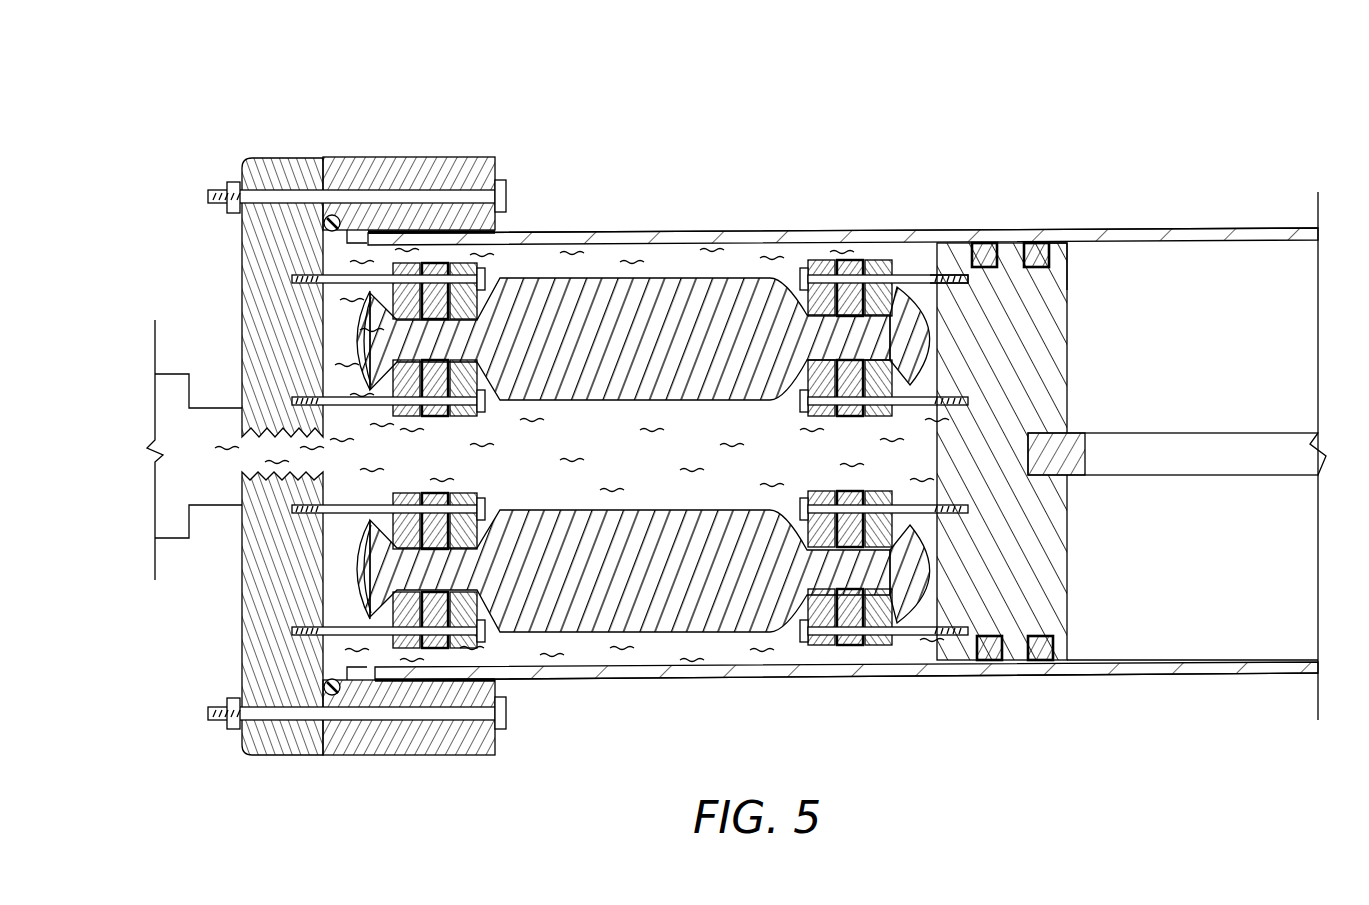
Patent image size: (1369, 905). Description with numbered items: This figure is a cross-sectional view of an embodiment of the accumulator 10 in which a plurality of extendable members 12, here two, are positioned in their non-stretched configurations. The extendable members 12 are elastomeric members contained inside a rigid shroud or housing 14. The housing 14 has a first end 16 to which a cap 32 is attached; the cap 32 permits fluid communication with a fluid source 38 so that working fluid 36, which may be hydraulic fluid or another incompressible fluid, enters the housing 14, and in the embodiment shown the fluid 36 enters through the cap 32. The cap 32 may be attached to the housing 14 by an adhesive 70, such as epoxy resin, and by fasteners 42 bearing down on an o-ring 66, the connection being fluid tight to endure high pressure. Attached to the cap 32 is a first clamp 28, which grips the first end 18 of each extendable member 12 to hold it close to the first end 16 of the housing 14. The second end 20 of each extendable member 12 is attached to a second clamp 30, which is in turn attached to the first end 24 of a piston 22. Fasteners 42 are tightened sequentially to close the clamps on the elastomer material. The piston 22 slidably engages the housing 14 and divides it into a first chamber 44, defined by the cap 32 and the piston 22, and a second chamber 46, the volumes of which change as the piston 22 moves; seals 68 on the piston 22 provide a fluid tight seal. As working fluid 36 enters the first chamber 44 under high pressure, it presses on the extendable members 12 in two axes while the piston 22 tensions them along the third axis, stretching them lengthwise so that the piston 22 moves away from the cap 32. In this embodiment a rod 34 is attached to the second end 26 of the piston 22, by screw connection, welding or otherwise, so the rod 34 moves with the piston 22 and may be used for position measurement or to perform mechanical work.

The accumulator 10 is at (1162, 108).
The extendable member 12 is at (578, 287).
The housing 14 is at (780, 232).
The first end of the housing 16 is at (365, 243).
The first end of the extendable member 18 is at (356, 600).
The second end of the extendable member 20 is at (900, 597).
The piston 22 is at (1062, 608).
The first end of the piston 24 is at (930, 262).
The second end of the piston 26 is at (1067, 258).
The first clamp 28 is at (485, 258).
The second clamp 30 is at (855, 258).
The cap 32 is at (340, 160).
The rod 34 is at (1248, 440).
The working fluid 36 is at (552, 655).
The fluid source 38 is at (172, 382).
The fasteners 42 is at (455, 195).
The first chamber 44 is at (668, 262).
The second chamber 46 is at (1225, 617).
The o-ring 66 is at (322, 225).
The seals 68 is at (1038, 258).
The adhesive 70 is at (433, 220).